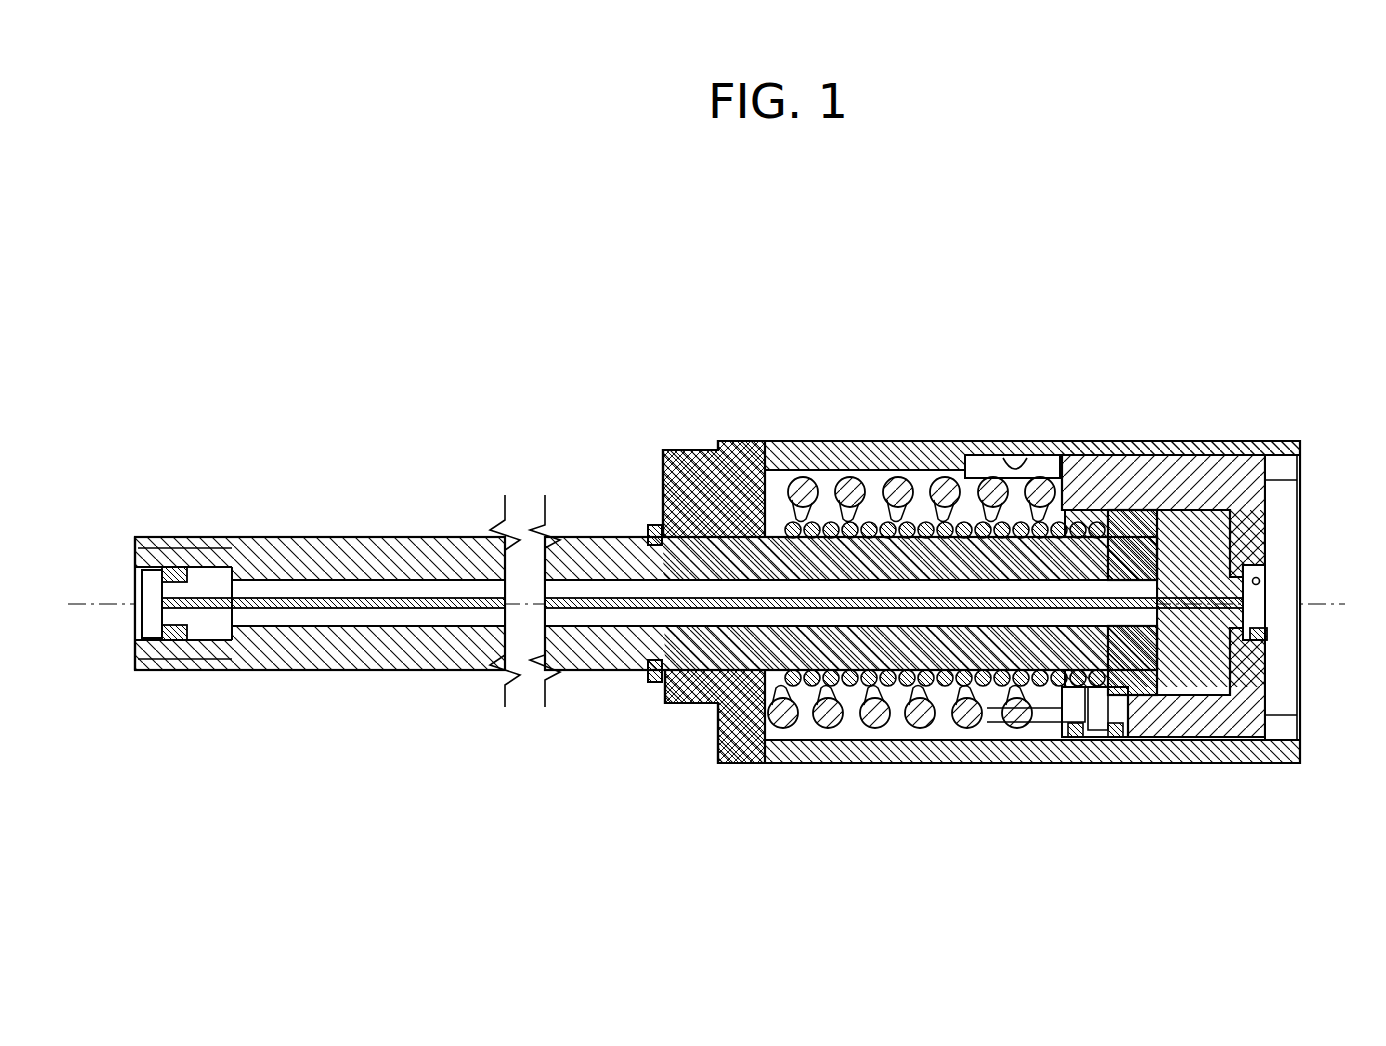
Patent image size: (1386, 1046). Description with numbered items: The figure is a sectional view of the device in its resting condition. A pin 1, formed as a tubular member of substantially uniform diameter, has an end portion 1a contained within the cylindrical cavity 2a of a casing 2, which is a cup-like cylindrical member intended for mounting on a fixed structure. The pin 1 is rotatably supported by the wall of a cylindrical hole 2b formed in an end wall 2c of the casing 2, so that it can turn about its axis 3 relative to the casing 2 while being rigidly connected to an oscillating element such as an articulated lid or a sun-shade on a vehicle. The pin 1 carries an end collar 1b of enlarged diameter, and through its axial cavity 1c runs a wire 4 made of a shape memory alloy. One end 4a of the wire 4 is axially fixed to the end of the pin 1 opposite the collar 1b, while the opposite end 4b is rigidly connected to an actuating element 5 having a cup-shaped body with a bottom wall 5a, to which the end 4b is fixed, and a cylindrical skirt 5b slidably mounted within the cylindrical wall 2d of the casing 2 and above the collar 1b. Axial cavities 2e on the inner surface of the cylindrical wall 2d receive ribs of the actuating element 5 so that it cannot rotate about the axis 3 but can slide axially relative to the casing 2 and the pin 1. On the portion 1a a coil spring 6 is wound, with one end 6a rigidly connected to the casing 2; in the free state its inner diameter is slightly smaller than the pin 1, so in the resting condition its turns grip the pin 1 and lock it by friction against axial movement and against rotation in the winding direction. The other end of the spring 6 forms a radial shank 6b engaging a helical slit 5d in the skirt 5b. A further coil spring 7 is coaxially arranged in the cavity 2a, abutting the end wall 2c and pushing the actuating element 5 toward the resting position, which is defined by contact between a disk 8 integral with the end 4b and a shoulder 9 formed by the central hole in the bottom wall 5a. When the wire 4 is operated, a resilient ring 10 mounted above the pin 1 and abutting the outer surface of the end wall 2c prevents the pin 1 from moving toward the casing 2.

The pin 1 is at (443, 526).
The end portion of the pin 1a is at (897, 560).
The end collar 1b is at (1140, 675).
The axial cavity 1c is at (350, 612).
The casing 2 is at (1080, 405).
The cylindrical cavity 2a is at (808, 468).
The cylindrical hole 2b is at (650, 628).
The end wall 2c is at (661, 478).
The cylindrical wall 2d is at (960, 766).
The axial cavities 2e is at (1000, 455).
The axis 3 is at (108, 606).
The shape memory wire 4 is at (420, 612).
The end of the shape memory wire 4a is at (133, 600).
The opposite end of the shape memory wire 4b is at (1268, 607).
The actuating element 5 is at (1222, 441).
The bottom wall 5a is at (1270, 673).
The cylindrical skirt 5b is at (1122, 478).
The helical slit 5d is at (1108, 737).
The coil spring 6 is at (848, 700).
The end of the coil spring 6a is at (803, 742).
The radial shank 6b is at (1083, 707).
The coil spring 7 is at (860, 480).
The disk 8 is at (1266, 580).
The shoulder 9 is at (1270, 630).
The resilient ring 10 is at (646, 522).